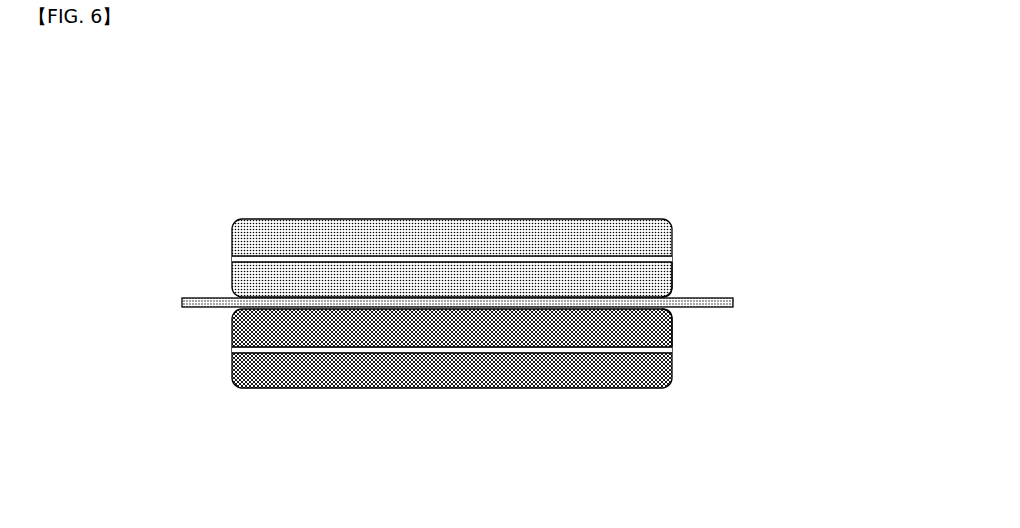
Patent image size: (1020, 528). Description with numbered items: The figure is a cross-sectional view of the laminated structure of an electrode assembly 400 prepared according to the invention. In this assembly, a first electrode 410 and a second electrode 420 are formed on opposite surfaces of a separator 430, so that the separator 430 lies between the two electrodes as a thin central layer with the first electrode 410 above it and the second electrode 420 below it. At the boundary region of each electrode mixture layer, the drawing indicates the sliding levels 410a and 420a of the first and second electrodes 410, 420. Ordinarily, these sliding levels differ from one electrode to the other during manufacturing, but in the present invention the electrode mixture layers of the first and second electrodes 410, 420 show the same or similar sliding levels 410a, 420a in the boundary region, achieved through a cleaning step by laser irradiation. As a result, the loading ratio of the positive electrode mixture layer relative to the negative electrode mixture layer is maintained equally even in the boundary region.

The electrode assembly 400 is at (165, 113).
The first electrode 410 is at (448, 218).
The sliding level of the first electrode 410a is at (682, 279).
The second electrode 420 is at (448, 387).
The sliding level of the second electrode 420a is at (680, 323).
The separator 430 is at (212, 297).